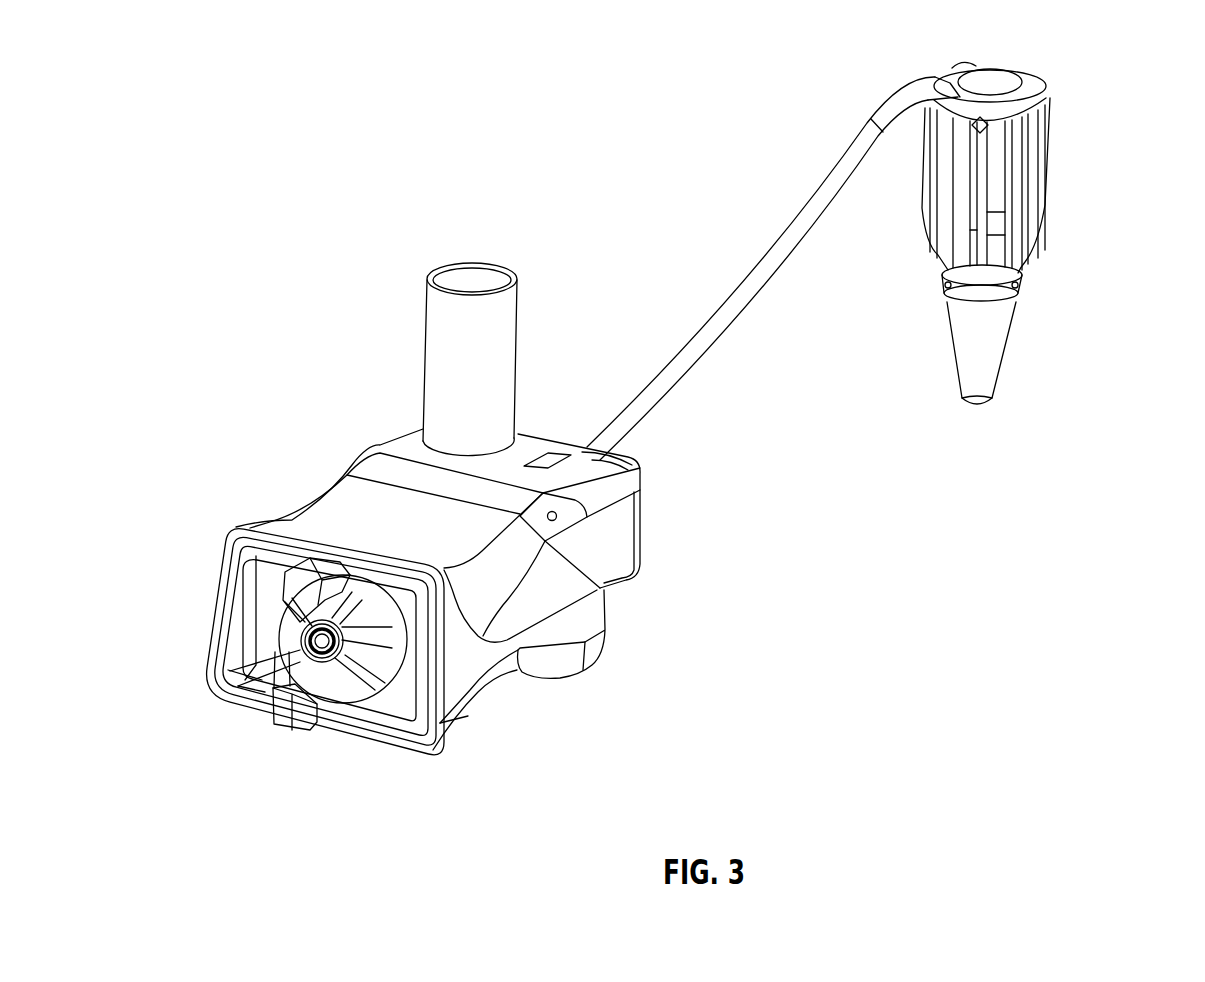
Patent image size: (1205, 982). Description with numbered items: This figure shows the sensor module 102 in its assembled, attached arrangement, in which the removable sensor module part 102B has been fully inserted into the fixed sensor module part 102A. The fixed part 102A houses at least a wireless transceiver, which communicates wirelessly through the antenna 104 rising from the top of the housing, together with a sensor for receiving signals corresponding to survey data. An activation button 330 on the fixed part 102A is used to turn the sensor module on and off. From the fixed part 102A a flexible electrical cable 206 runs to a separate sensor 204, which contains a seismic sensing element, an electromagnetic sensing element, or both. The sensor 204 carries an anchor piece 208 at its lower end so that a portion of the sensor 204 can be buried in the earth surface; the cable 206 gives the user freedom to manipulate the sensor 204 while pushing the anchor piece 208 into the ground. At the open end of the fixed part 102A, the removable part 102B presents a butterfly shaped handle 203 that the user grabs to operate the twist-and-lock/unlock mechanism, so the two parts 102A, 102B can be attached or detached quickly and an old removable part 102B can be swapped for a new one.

The sensor module 102 is at (238, 438).
The fixed sensor module part 102A is at (523, 648).
The removable sensor module part 102B is at (399, 702).
The antenna 104 is at (428, 297).
The butterfly shaped handle 203 is at (282, 730).
The sensor 204 is at (1050, 130).
The flexible electrical cable 206 is at (778, 242).
The anchor piece 208 is at (1001, 334).
The activation button 330 is at (592, 452).